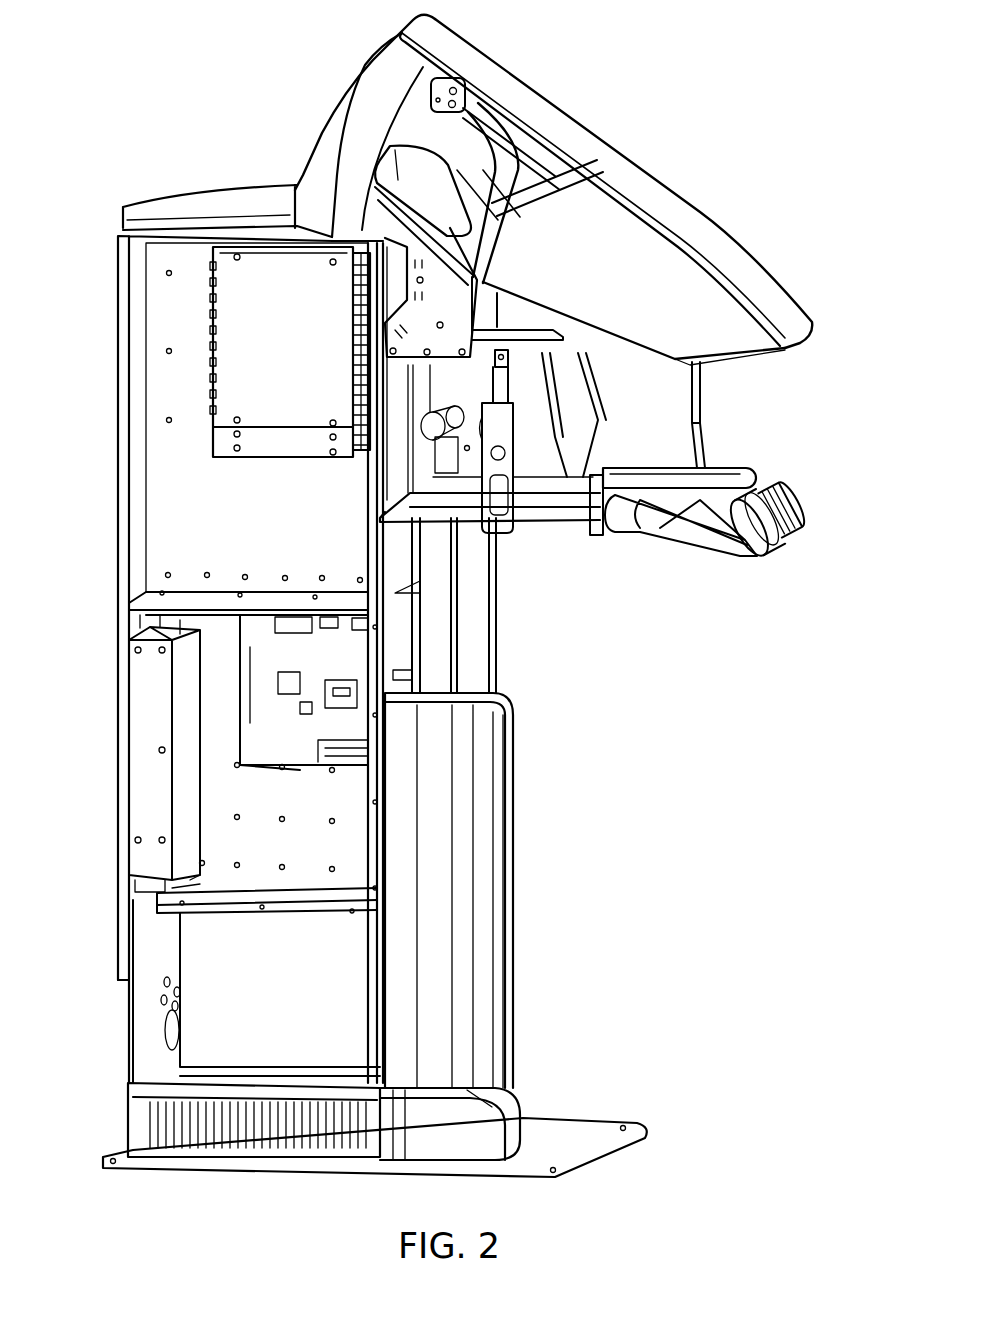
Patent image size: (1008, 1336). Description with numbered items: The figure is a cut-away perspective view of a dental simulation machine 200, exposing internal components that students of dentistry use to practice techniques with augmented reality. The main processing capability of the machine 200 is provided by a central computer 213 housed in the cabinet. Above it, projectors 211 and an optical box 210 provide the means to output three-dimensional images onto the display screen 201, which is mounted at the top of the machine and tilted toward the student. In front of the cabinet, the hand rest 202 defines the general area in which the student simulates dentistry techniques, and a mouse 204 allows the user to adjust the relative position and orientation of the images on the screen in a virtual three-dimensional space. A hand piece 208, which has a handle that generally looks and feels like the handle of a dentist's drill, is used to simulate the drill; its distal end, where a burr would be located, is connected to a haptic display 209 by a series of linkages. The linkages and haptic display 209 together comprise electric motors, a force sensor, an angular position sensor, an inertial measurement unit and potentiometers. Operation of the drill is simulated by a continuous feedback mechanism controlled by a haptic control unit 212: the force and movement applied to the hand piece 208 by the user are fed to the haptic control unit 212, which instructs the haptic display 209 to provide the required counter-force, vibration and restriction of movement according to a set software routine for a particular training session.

The dental simulation machine 200 is at (688, 98).
The display screen 201 is at (780, 280).
The hand rest 202 is at (753, 475).
The mouse 204 is at (800, 523).
The hand piece 208 is at (700, 428).
The haptic display 209 is at (525, 380).
The optical box 210 is at (593, 215).
The projectors 211 is at (417, 180).
The haptic control unit 212 is at (248, 332).
The central computer 213 is at (305, 657).